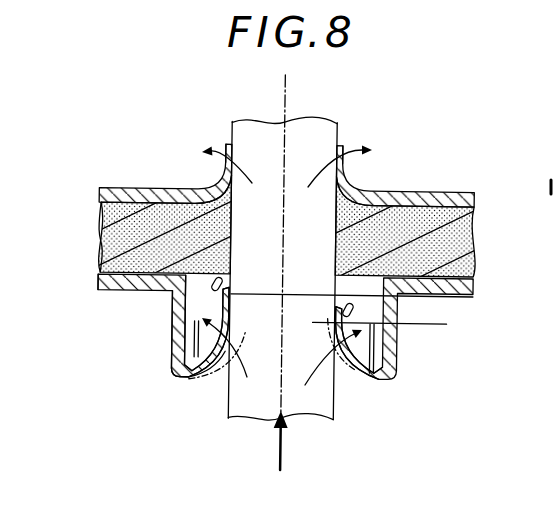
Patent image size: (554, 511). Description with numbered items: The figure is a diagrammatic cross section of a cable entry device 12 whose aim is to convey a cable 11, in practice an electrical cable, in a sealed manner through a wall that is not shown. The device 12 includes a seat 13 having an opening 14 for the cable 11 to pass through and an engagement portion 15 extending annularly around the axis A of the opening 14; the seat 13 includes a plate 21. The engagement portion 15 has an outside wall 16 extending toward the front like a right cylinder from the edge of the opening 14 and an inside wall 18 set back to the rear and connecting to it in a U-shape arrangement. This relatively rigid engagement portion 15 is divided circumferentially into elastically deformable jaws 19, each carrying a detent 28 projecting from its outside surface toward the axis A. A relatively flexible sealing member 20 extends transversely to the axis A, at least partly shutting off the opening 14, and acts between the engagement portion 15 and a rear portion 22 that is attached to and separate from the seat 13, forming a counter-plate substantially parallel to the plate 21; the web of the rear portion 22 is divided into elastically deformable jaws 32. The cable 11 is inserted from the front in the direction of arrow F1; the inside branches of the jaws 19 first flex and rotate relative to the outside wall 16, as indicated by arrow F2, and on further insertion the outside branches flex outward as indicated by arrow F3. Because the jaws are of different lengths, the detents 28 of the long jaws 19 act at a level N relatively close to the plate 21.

The cable 11 is at (336, 420).
The cable entry device 12 is at (150, 381).
The seat 13 is at (123, 300).
The opening 14 is at (382, 288).
The engagement portion 15 is at (168, 383).
The outside wall 16 is at (163, 318).
The inside wall 18 is at (245, 332).
The long jaw 19 is at (212, 378).
The sealing member 20 is at (483, 230).
The plate 21 is at (102, 283).
The rear portion 22 is at (438, 185).
The detent 28 is at (226, 285).
The jaws of the web 32 is at (228, 152).
The axis A is at (285, 90).
The level N is at (473, 298).
The arrow F1 is at (283, 450).
The arrow F2 is at (227, 364).
The arrow F3 is at (366, 126).